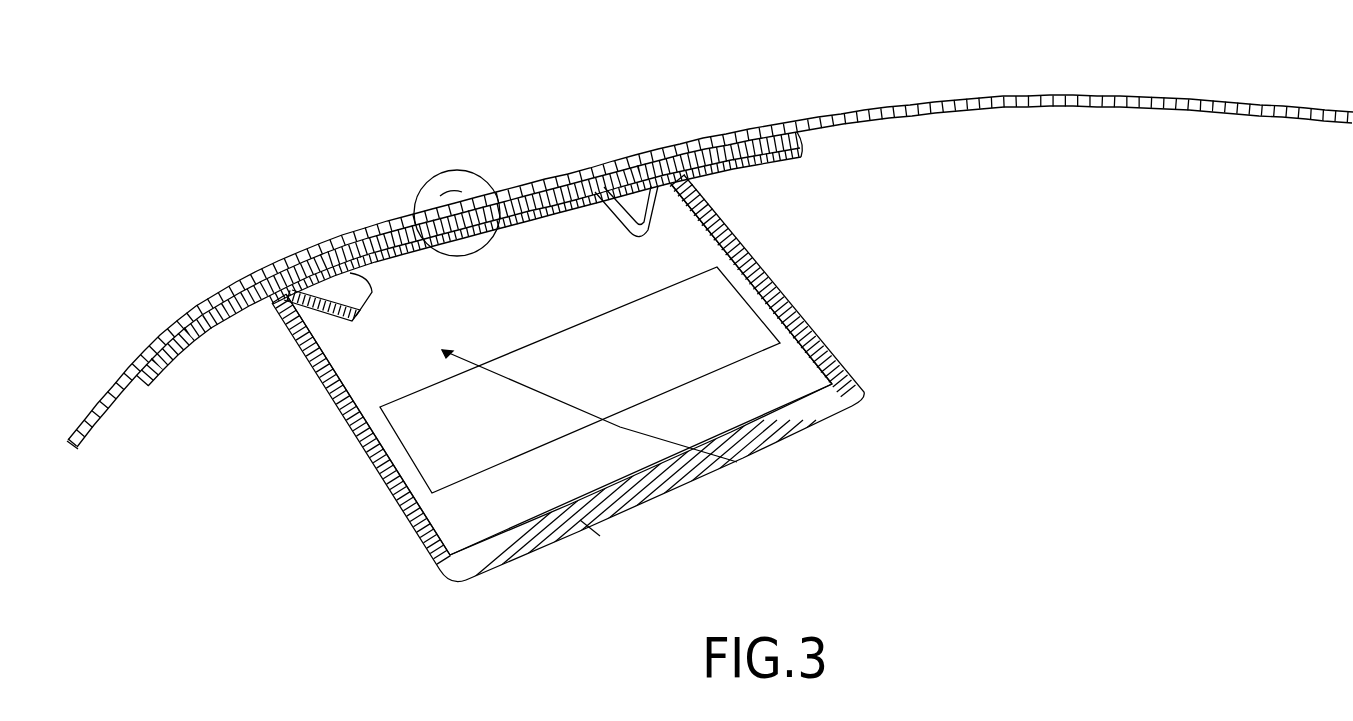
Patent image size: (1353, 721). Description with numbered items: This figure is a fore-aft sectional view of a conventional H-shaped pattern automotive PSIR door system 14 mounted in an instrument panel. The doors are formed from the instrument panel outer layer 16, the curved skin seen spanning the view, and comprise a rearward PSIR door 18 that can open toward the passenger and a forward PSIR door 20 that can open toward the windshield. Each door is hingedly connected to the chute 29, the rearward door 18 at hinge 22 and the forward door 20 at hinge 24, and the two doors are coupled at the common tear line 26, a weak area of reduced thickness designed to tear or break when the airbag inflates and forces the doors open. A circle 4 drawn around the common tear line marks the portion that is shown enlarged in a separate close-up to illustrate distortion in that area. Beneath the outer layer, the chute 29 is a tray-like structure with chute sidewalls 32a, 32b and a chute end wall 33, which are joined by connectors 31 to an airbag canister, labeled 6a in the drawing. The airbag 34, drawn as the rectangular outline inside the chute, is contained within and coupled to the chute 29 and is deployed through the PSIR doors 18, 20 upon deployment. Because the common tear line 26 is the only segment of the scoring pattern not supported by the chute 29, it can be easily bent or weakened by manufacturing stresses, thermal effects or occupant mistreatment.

The PSIR door system 14 is at (650, 78).
The instrument panel outer layer 16 is at (134, 342).
The rearward PSIR door 18 is at (385, 228).
The forward PSIR door 20 is at (566, 172).
The hinge 22 is at (375, 290).
The hinge 24 is at (612, 224).
The common tear line 26 is at (452, 195).
The detail circle 4 is at (487, 174).
The chute 29 is at (291, 344).
The connectors 31 is at (356, 440).
The chute sidewall 32a is at (310, 382).
The chute sidewall 32b is at (745, 214).
The chute end wall 33 is at (737, 462).
The airbag 34 is at (747, 333).
The section reference 6a is at (585, 528).